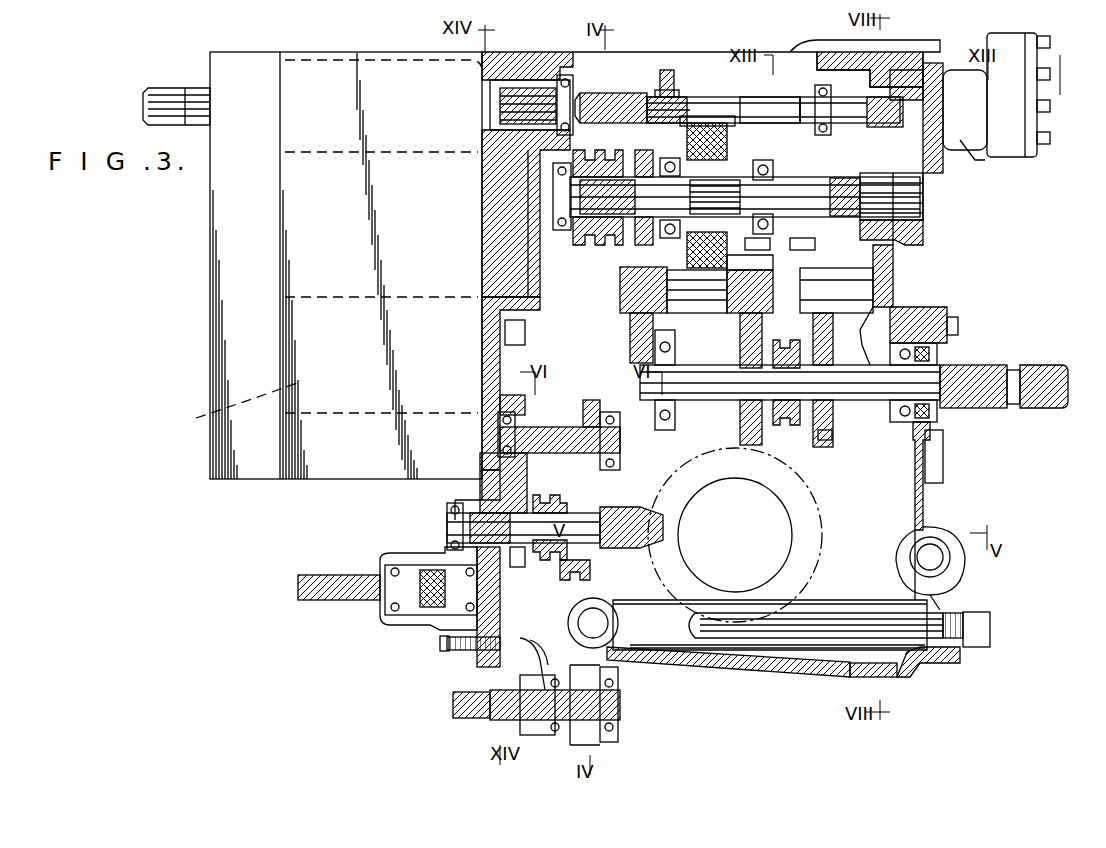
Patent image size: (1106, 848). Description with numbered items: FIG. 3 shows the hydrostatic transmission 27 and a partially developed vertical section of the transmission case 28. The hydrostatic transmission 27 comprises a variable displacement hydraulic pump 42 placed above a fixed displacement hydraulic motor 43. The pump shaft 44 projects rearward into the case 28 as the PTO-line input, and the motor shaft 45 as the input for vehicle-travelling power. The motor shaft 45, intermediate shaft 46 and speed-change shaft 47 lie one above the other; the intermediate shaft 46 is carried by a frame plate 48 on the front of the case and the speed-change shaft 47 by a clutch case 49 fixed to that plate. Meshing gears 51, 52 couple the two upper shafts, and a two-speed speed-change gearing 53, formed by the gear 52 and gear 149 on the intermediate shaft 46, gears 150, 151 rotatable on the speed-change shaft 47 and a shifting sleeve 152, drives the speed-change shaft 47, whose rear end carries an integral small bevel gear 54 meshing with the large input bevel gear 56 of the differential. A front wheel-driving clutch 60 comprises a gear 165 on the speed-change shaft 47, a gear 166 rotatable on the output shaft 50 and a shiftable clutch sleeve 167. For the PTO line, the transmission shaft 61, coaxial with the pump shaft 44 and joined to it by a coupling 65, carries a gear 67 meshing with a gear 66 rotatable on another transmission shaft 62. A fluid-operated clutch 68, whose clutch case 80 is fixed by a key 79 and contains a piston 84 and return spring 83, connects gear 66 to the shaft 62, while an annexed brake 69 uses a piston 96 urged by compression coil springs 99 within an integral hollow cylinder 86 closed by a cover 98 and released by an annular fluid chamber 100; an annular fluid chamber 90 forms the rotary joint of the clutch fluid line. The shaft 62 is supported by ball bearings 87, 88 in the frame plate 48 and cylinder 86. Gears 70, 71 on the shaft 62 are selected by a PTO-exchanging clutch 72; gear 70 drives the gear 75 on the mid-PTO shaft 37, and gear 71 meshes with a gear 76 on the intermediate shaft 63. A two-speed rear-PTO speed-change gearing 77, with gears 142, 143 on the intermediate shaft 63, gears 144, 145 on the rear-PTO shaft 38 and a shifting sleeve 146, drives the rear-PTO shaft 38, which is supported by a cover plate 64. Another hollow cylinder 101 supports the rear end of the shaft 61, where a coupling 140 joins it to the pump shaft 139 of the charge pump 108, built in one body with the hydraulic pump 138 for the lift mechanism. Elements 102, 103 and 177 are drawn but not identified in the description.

The hydrostatic transmission 27 is at (342, 465).
The transmission case 28 is at (737, 655).
The mid-PTO shaft 37 is at (505, 700).
The rear-PTO shaft 38 is at (870, 385).
The hydraulic pump 42 is at (350, 70).
The hydraulic motor 43 is at (321, 364).
The pump shaft 44 is at (172, 95).
The motor shaft 45 is at (505, 335).
The intermediate shaft 46 is at (558, 430).
The speed-change shaft 47 is at (575, 580).
The frame plate 48 is at (478, 655).
The clutch case 49 is at (435, 530).
The output shaft 50 is at (388, 608).
The gear 51 is at (500, 300).
The gear 52 is at (500, 402).
The speed-change gearing 53 is at (615, 500).
The bevel gear 54 is at (690, 512).
The input bevel gear 56 is at (810, 560).
The front wheel-driving clutch 60 is at (425, 608).
The transmission shaft 61 is at (768, 100).
The transmission shaft 62 is at (765, 190).
The intermediate shaft 63 is at (684, 374).
The cover plate 64 is at (925, 500).
The coupling 65 is at (545, 92).
The gear 66 is at (673, 290).
The gear 67 is at (668, 72).
The fluid-operated clutch 68 is at (708, 118).
The brake 69 is at (815, 165).
The gear 70 is at (580, 148).
The gear 71 is at (643, 148).
The PTO-exchanging clutch 72 is at (608, 135).
The gear 75 is at (600, 730).
The gear 76 is at (635, 348).
The rear-PTO speed-change gearing 77 is at (895, 305).
The key 79 is at (738, 190).
The clutch case 80 is at (695, 330).
The return spring 83 is at (700, 184).
The piston 84 is at (720, 150).
The hollow cylinder 86 is at (801, 253).
The ball bearing 87 is at (555, 218).
The ball bearing 88 is at (772, 109).
The annular fluid chamber 90 is at (767, 250).
The piston 96 is at (918, 226).
The cover 98 is at (955, 130).
The compression coil springs 99 is at (925, 190).
The annular fluid chamber 100 is at (893, 250).
The hollow cylinder 101 is at (845, 75).
The bearing 102 is at (555, 180).
The gear 103 is at (590, 232).
The charge pump 108 is at (968, 150).
The hydraulic pump 138 is at (1005, 62).
The pump shaft 139 is at (920, 70).
The coupling 140 is at (905, 88).
The gear 142 is at (762, 268).
The gear 143 is at (820, 268).
The gear 144 is at (752, 437).
The gear 145 is at (830, 440).
The shifting sleeve 146 is at (780, 435).
The gear 149 is at (590, 398).
The gear 150 is at (515, 565).
The gear 151 is at (585, 580).
The shifting sleeve 152 is at (550, 495).
The gear 165 is at (488, 485).
The gear 166 is at (455, 644).
The clutch sleeve 167 is at (418, 553).
The rod 177 is at (822, 648).